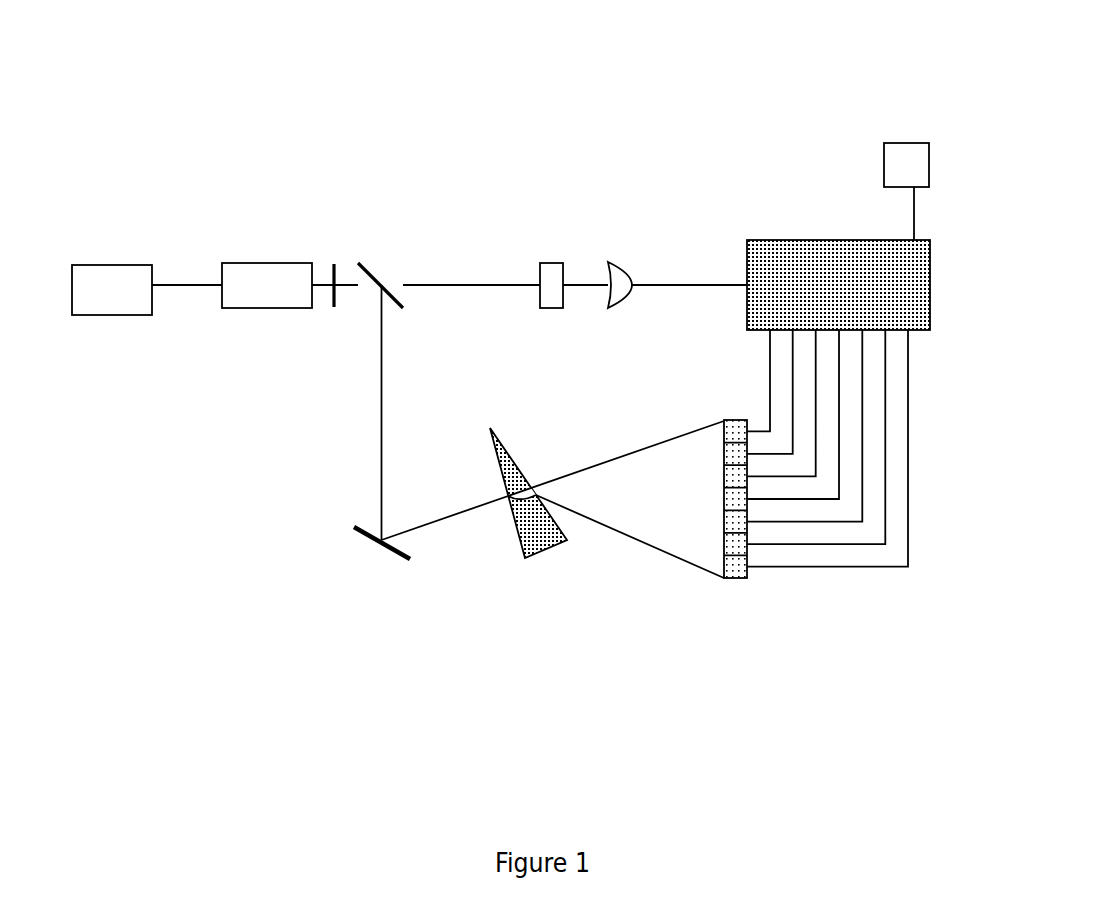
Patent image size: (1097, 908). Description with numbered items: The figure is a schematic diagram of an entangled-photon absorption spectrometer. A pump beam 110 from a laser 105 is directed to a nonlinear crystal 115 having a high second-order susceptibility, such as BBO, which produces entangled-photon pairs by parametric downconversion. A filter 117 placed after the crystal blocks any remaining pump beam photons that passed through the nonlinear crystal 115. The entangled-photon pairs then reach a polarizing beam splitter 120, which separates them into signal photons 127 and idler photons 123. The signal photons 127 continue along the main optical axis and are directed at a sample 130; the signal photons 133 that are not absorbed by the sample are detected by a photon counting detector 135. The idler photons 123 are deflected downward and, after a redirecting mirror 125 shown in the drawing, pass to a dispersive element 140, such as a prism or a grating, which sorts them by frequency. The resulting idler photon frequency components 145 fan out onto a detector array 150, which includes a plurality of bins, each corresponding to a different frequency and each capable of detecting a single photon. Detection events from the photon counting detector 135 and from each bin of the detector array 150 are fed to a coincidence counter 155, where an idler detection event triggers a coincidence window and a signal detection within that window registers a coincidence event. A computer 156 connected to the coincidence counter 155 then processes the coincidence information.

The laser 105 is at (117, 242).
The pump beam 110 is at (204, 260).
The nonlinear crystal 115 is at (232, 332).
The filter 117 is at (320, 240).
The polarizing beam splitter 120 is at (384, 262).
The idler photons 123 is at (366, 396).
The mirror 125 is at (381, 570).
The signal photons 127 is at (467, 283).
The sample 130 is at (550, 257).
The signal photons that are not absorbed 133 is at (583, 283).
The photon counting detector 135 is at (643, 263).
The dispersive element 140 is at (541, 592).
The idler photon frequency components 145 is at (659, 572).
The detector array 150 is at (735, 590).
The coincidence counter 155 is at (783, 220).
The computer 156 is at (902, 135).